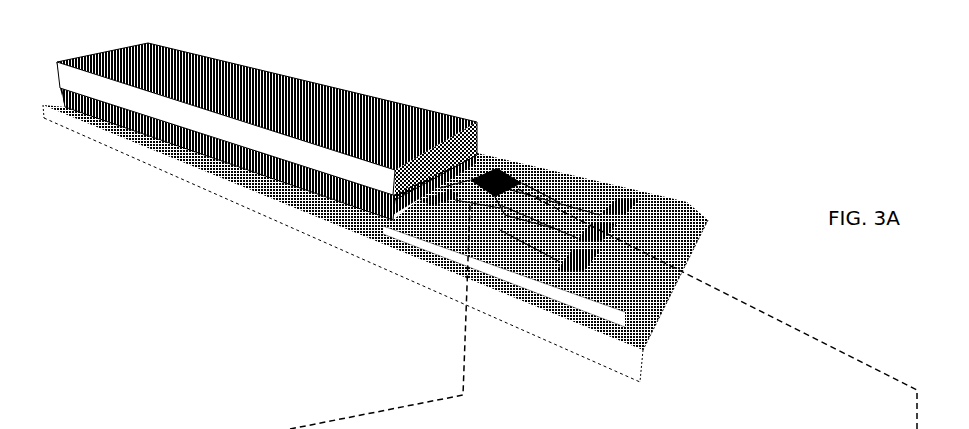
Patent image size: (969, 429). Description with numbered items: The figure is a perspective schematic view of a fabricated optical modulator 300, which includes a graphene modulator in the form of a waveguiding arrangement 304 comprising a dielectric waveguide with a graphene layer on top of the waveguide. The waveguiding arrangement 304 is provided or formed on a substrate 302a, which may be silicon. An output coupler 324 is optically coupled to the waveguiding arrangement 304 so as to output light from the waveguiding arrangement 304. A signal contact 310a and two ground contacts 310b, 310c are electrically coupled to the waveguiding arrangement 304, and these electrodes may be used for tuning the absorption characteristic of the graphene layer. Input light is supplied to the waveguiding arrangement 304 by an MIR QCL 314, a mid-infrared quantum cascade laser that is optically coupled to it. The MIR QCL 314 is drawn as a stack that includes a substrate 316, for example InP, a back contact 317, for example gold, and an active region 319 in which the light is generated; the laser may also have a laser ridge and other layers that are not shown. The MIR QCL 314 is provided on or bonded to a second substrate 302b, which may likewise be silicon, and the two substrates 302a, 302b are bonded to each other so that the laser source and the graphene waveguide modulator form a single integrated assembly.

The optical modulator 300 is at (672, 97).
The substrate 302a is at (453, 255).
The substrate 302b is at (300, 223).
The waveguiding arrangement 304 is at (437, 197).
The signal contact 310a is at (590, 223).
The ground contact 310b is at (623, 203).
The ground contact 310c is at (587, 267).
The MIR QCL 314 is at (448, 82).
The substrate 316 is at (463, 148).
The back contact 317 is at (313, 95).
The active region 319 is at (103, 105).
The output coupler 324 is at (512, 168).